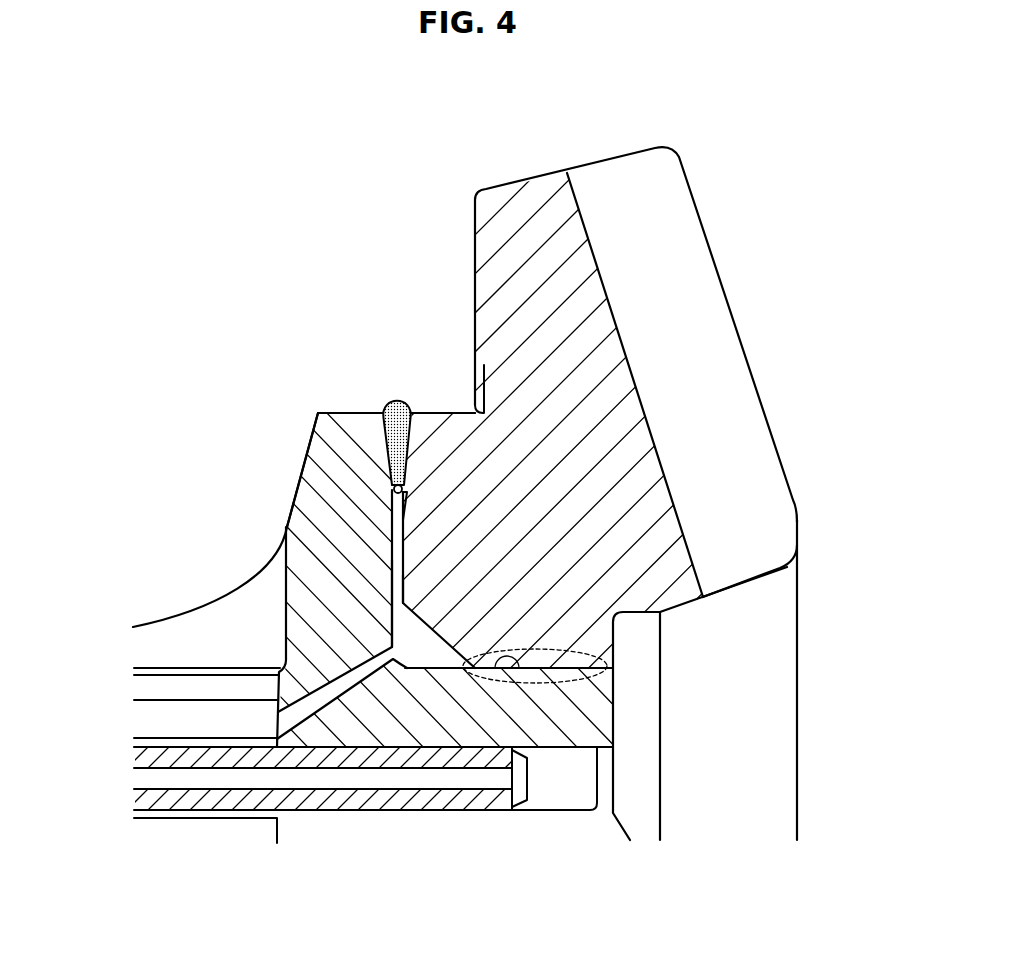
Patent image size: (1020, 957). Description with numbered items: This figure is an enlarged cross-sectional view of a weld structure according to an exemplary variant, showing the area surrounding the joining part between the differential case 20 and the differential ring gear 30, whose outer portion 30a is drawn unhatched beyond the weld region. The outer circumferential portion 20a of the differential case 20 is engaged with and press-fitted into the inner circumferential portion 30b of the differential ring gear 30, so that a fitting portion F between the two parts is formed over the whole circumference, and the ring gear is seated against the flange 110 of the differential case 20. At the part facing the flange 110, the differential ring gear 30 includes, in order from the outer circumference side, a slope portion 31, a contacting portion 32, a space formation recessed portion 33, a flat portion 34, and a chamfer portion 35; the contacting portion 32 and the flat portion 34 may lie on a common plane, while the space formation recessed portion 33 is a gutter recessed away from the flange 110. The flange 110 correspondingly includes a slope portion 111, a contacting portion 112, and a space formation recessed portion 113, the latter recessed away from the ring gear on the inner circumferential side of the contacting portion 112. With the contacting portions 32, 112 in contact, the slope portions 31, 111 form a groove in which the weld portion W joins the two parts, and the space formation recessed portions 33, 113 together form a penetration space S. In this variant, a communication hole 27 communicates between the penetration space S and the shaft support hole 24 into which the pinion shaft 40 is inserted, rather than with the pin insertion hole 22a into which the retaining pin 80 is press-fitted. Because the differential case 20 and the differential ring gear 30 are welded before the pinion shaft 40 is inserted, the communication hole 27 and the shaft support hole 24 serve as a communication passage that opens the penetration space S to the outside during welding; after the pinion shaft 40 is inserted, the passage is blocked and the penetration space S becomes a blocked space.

The differential ring gear 30 is at (521, 230).
The rim flange 30a is at (637, 212).
The inner circumferential portion 30b is at (590, 704).
The slope portion 31 is at (423, 410).
The contacting portion 32 is at (443, 447).
The space formation recessed portion 33 is at (402, 495).
The flat portion 34 is at (402, 547).
The chamfer portion 35 is at (432, 630).
The fitting portion F is at (615, 652).
The penetration space S is at (387, 570).
The weld portion W is at (402, 397).
The flange 110 is at (323, 513).
The slope portion 111 is at (378, 440).
The contacting portion 112 is at (378, 460).
The space formation recessed portion 113 is at (387, 601).
The pinion shaft 40 is at (235, 717).
The shaft support hole 24 is at (278, 690).
The communication hole 27 is at (278, 727).
The differential case 20 is at (347, 727).
The outer circumferential portion 20a is at (513, 668).
The pin insertion hole 22a is at (367, 793).
The retaining pin 80 is at (175, 800).